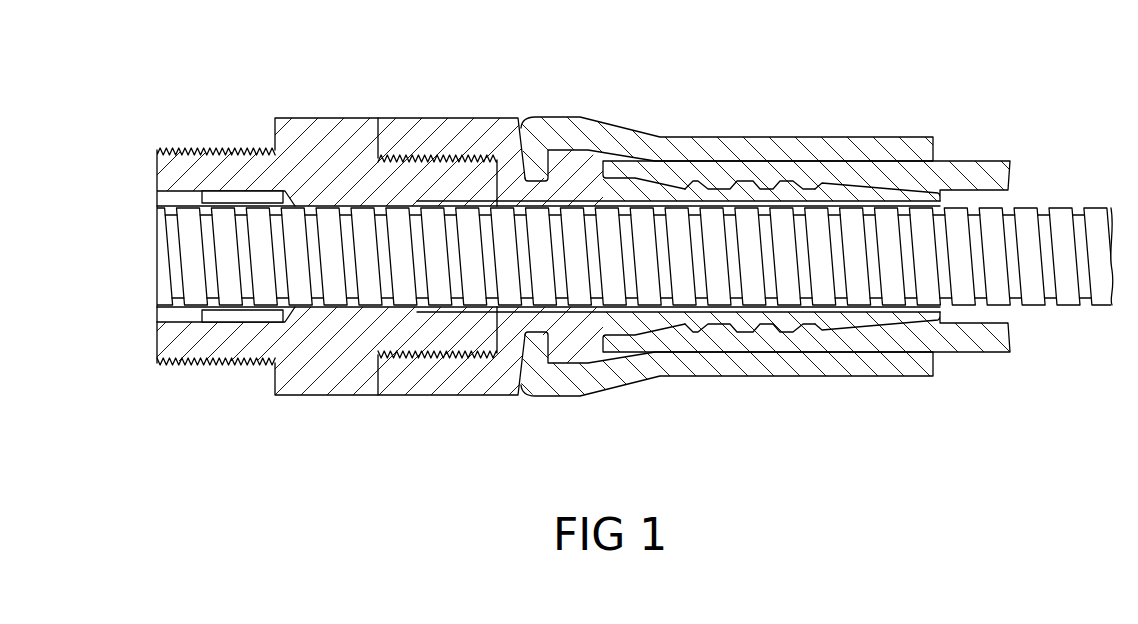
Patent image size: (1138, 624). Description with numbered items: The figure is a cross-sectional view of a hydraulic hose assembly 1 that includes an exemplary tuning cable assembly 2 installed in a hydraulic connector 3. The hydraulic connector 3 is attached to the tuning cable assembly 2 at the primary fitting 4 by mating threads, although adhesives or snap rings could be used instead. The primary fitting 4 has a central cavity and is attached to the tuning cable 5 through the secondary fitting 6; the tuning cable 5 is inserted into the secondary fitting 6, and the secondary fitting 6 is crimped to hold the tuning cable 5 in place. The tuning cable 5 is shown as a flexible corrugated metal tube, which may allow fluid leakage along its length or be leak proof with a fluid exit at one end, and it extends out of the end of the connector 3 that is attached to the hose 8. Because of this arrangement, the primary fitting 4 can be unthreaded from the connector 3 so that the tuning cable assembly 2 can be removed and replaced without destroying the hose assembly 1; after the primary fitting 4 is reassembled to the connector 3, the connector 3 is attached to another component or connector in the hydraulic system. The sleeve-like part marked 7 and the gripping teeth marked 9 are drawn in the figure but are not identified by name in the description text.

The hydraulic hose assembly 1 is at (662, 80).
The tuning cable assembly 2 is at (327, 118).
The hydraulic connector 3 is at (440, 124).
The primary fitting 4 is at (327, 393).
The tuning cable 5 is at (1068, 296).
The secondary fitting 6 is at (165, 201).
The outer sleeve 7 is at (848, 362).
The hose 8 is at (948, 172).
The gripping teeth 9 is at (745, 185).